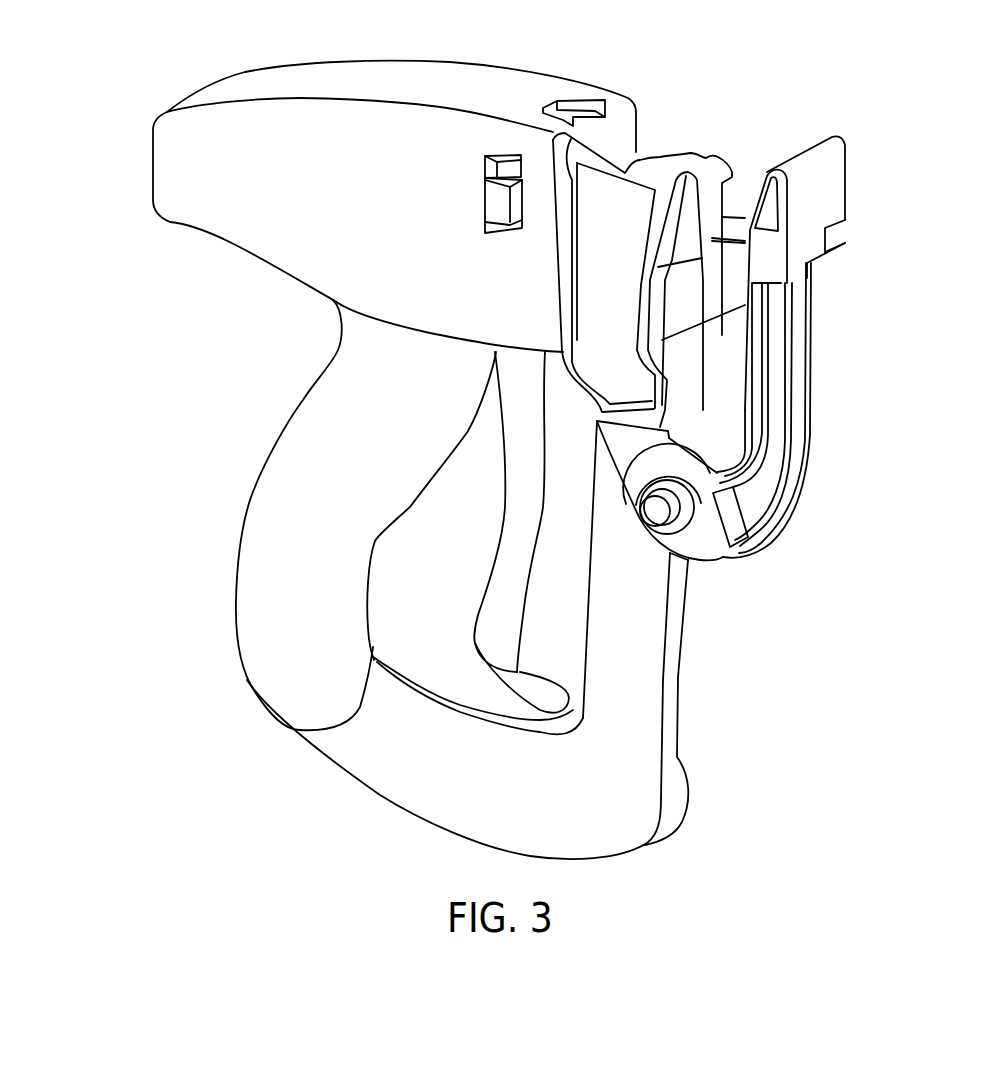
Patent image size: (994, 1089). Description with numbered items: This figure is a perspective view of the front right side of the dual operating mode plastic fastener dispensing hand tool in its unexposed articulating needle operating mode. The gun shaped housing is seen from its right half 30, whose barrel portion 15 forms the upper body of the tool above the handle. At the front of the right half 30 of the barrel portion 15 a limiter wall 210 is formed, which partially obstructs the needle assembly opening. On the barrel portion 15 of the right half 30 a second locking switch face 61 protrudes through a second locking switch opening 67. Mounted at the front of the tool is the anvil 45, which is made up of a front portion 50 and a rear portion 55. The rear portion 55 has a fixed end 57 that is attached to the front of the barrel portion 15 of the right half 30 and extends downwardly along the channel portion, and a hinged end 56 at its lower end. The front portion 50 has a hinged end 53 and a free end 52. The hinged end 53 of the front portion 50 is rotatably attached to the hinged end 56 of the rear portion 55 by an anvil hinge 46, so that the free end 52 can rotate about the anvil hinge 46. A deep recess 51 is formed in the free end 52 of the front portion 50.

The barrel portion 15 is at (138, 150).
The right half 30 is at (321, 100).
The second locking switch opening 67 is at (483, 157).
The second locking switch face 61 is at (492, 203).
The fixed end 57 is at (597, 278).
The rear portion 55 is at (622, 187).
The hinged end 56 is at (632, 443).
The anvil hinge 46 is at (647, 521).
The front portion 50 is at (775, 373).
The free end 52 is at (818, 168).
The deep recess 51 is at (840, 235).
The limiter wall 210 is at (712, 238).
The hinged end 53 is at (720, 548).
The anvil 45 is at (707, 580).